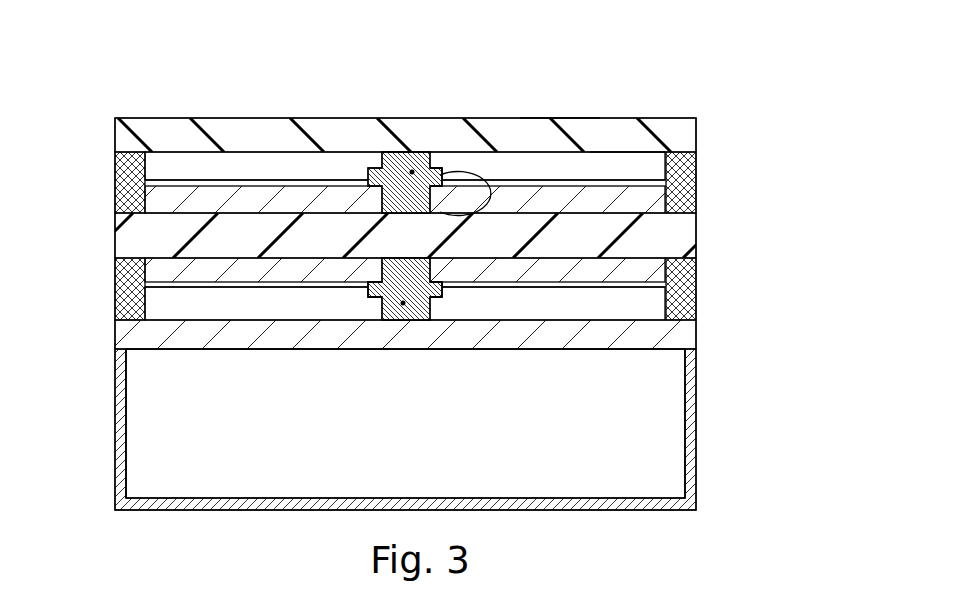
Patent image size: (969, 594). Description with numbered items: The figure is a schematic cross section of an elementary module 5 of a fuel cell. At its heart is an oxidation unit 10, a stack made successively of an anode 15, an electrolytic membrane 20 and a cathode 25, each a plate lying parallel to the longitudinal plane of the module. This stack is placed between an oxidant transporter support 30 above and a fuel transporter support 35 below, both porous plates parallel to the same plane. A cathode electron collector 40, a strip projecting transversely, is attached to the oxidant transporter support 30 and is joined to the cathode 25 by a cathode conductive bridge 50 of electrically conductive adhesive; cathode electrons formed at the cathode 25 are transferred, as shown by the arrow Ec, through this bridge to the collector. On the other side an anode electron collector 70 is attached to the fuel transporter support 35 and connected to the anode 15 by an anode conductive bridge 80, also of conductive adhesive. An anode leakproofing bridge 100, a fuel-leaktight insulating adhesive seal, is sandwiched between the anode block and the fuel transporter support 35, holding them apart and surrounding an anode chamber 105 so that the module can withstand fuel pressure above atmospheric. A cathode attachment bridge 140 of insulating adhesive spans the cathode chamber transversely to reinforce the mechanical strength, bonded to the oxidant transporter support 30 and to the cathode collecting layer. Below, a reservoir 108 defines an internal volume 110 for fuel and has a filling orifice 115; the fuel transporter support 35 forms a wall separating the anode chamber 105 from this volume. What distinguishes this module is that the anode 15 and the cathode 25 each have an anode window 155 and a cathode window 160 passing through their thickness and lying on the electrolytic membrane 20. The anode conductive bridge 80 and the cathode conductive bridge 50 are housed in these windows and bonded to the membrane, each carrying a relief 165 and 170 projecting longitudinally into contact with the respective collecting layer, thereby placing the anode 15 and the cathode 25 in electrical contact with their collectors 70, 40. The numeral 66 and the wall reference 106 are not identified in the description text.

The elementary module 5 is at (112, 80).
The oxidation unit 10 is at (688, 225).
The anode 15 is at (118, 283).
The electrolytic membrane 20 is at (122, 226).
The cathode 25 is at (128, 192).
The oxidant transporter support 30 is at (587, 138).
The fuel transporter support 35 is at (656, 343).
The cathode electron collector 40 is at (402, 153).
The cathode conductive bridge 50 is at (412, 172).
The cap inner surface 66 is at (618, 152).
The anode electron collector 70 is at (408, 320).
The anode conductive bridge 80 is at (403, 303).
The anode leakproofing bridge 100 is at (690, 307).
The anode chamber 105 is at (176, 300).
The housing side wall 106 is at (699, 349).
The reservoir 108 is at (638, 510).
The internal volume 110 is at (653, 433).
The filling orifice 115 is at (117, 468).
The cathode attachment bridge 140 is at (700, 162).
The anode window 155 is at (380, 320).
The cathode window 160 is at (393, 157).
The relief of anode conductive bridge 165 is at (443, 293).
The relief of cathode conductive bridge 170 is at (437, 178).
The arrow Ec is at (558, 118).